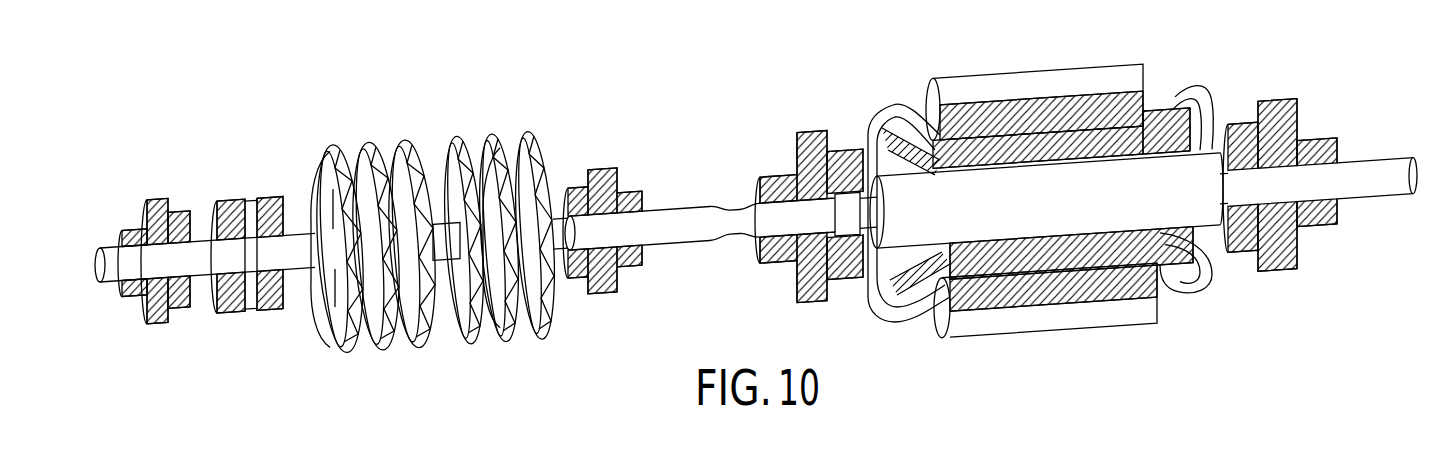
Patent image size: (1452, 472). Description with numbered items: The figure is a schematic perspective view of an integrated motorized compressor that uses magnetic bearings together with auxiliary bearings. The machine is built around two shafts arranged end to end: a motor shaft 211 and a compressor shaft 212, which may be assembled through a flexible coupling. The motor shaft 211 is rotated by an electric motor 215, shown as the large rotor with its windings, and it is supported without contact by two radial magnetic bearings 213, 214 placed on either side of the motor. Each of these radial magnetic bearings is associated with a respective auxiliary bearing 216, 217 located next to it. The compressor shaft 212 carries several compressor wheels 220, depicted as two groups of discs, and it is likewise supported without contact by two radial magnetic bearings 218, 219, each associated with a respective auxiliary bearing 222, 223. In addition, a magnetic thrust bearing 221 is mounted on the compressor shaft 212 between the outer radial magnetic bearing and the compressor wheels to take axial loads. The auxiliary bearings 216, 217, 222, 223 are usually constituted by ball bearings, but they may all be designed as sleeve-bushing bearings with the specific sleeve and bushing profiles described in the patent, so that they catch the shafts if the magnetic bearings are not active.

The motor shaft 211 is at (790, 222).
The compressor shaft 212 is at (667, 220).
The radial magnetic bearing 213 is at (812, 136).
The radial magnetic bearing 214 is at (1277, 106).
The electric motor 215 is at (1026, 78).
The auxiliary bearing 216 is at (756, 194).
The auxiliary bearing 217 is at (1348, 160).
The radial magnetic bearing 218 is at (167, 198).
The radial magnetic bearing 219 is at (575, 172).
The compressor wheels 220 is at (365, 138).
The magnetic thrust bearing 221 is at (247, 199).
The auxiliary bearing 222 is at (133, 297).
The auxiliary bearing 223 is at (627, 272).